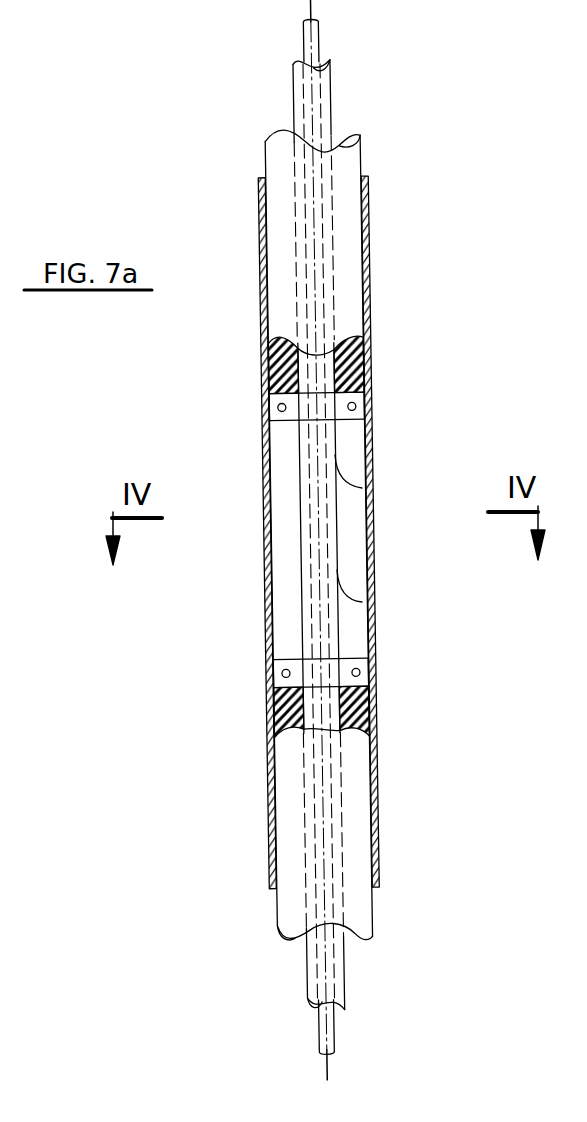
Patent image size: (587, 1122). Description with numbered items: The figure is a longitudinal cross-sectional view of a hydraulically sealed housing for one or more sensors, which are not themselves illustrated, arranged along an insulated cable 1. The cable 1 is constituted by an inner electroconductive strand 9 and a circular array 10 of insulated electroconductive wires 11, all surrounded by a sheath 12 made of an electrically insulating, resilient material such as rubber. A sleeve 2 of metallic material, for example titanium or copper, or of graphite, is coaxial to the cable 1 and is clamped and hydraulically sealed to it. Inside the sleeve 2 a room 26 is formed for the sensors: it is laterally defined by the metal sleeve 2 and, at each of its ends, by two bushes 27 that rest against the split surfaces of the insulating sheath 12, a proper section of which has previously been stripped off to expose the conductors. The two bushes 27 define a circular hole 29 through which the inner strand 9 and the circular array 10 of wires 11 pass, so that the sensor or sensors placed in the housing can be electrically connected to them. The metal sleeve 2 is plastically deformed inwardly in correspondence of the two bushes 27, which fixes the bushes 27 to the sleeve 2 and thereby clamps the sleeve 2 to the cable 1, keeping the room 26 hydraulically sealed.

The insulated cable 1 is at (392, 913).
The sleeve 2 is at (368, 232).
The inner electroconductive strand 9 is at (318, 33).
The circular array 10 is at (335, 89).
The insulated electroconductive wires 11 is at (352, 470).
The sheath 12 is at (348, 163).
The room 26 is at (287, 584).
The bushes 27 is at (356, 408).
The circular hole 29 is at (278, 408).